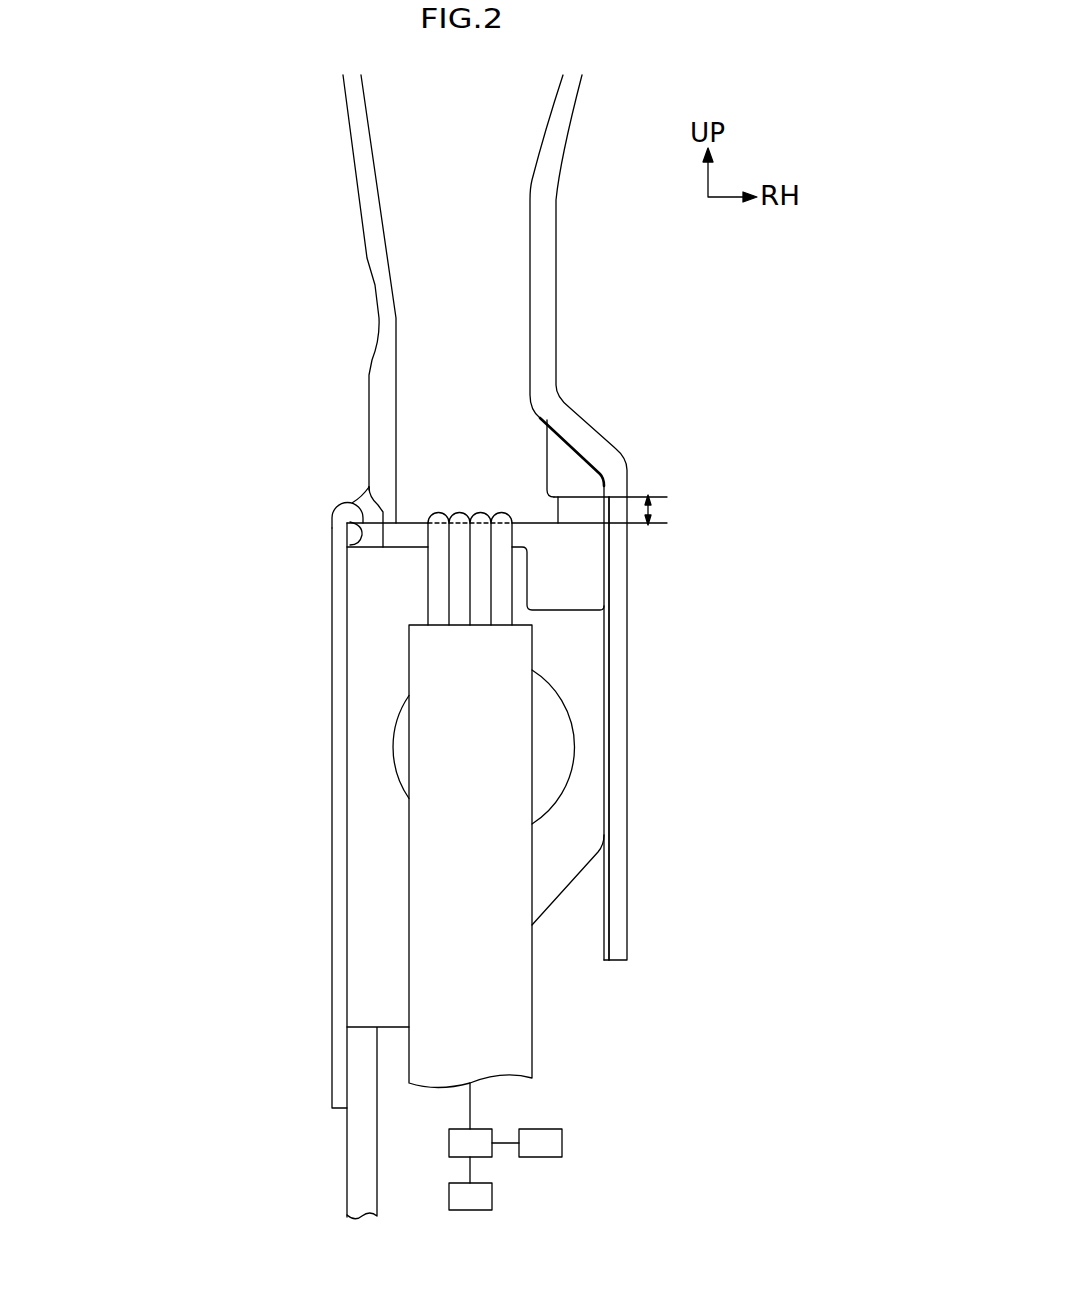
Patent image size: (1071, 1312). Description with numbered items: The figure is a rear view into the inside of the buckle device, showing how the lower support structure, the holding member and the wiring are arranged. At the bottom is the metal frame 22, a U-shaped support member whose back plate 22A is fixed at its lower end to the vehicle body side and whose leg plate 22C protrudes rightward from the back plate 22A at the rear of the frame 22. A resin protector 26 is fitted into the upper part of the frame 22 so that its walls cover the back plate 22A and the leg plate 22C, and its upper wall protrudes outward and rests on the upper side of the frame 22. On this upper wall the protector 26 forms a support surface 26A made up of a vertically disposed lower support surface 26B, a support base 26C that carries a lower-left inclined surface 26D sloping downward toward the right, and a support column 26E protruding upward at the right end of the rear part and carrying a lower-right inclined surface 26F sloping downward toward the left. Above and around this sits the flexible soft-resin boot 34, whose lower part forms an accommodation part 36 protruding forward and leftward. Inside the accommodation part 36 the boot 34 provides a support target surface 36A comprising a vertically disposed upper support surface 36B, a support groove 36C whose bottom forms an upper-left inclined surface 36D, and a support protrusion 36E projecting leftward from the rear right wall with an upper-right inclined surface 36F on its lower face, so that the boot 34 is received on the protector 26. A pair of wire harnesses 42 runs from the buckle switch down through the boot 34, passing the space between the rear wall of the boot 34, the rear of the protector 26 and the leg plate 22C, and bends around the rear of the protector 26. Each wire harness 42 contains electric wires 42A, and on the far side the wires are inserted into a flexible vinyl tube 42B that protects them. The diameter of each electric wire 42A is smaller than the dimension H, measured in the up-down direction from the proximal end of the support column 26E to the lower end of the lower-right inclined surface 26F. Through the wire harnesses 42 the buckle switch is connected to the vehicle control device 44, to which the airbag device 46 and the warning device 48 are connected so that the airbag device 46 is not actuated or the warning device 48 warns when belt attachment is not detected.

The frame 22 is at (485, 858).
The back plate 22A is at (347, 1152).
The leg plate 22C is at (610, 720).
The protector 26 is at (478, 311).
The support surface 26A is at (478, 482).
The lower support surface 26B is at (366, 487).
The support base 26C is at (350, 522).
The lower-left inclined surface 26D is at (352, 503).
The support column 26E is at (553, 515).
The lower-right inclined surface 26F is at (578, 470).
The boot 34 is at (572, 128).
The accommodation part 36 is at (472, 792).
The support target surface 36A is at (472, 836).
The upper support surface 36B is at (348, 600).
The support groove 36C is at (352, 532).
The upper-left inclined surface 36D is at (350, 565).
The support protrusion 36E is at (537, 405).
The upper-right inclined surface 36F is at (610, 486).
The wire harness 42 is at (467, 753).
The electric wire 42A is at (440, 503).
The vinyl tube 42B is at (409, 877).
The control device 44 is at (449, 1143).
The airbag device 46 is at (562, 1143).
The warning device 48 is at (492, 1197).
The dimension H is at (660, 510).